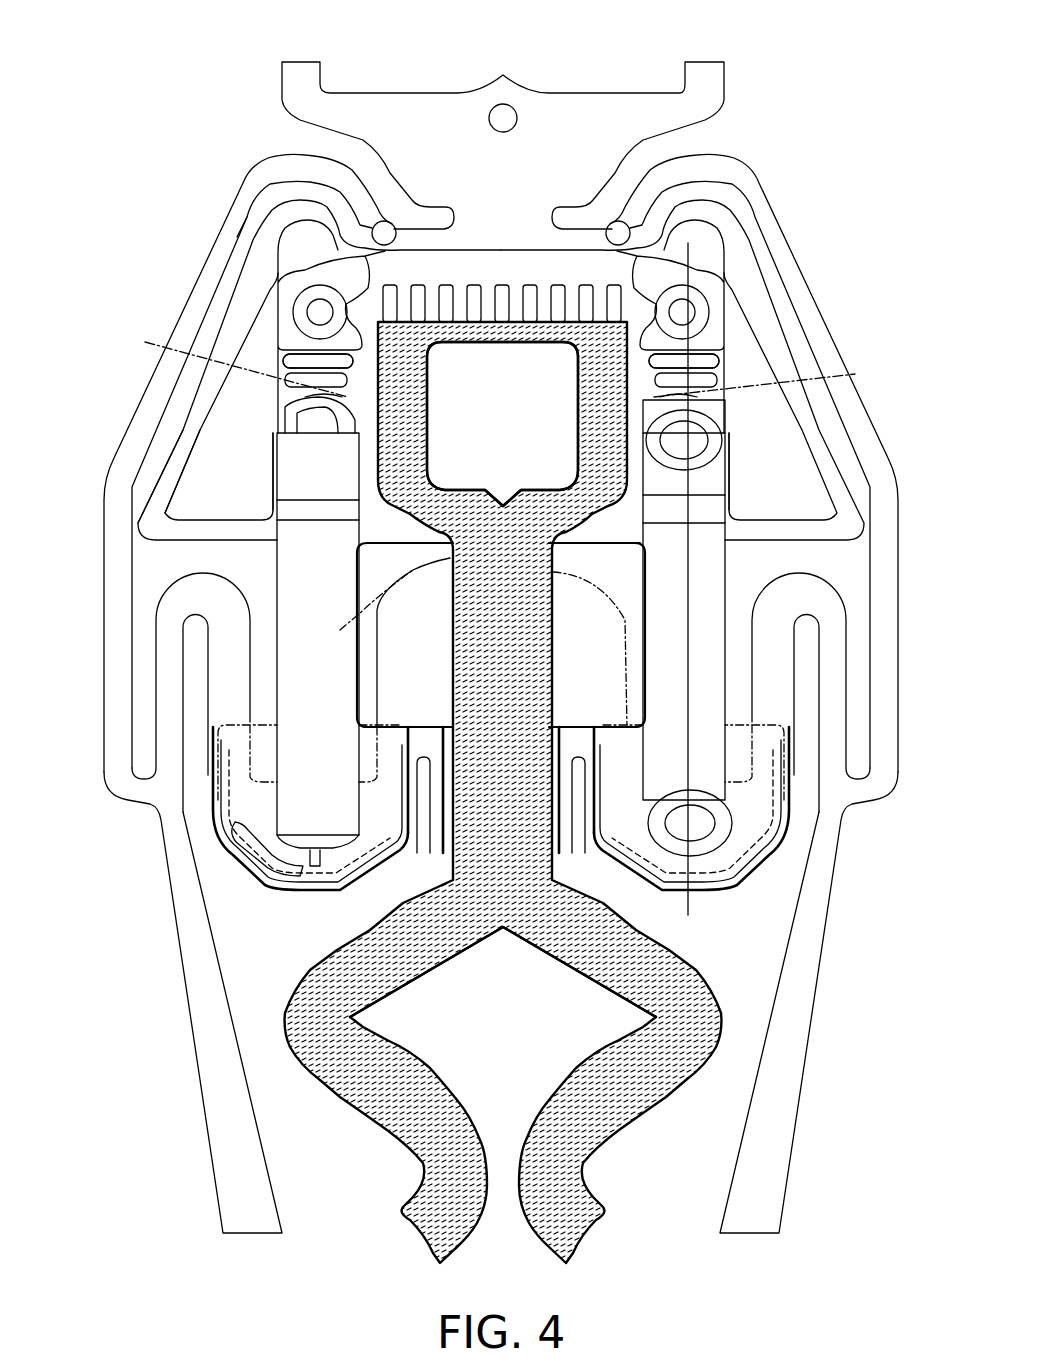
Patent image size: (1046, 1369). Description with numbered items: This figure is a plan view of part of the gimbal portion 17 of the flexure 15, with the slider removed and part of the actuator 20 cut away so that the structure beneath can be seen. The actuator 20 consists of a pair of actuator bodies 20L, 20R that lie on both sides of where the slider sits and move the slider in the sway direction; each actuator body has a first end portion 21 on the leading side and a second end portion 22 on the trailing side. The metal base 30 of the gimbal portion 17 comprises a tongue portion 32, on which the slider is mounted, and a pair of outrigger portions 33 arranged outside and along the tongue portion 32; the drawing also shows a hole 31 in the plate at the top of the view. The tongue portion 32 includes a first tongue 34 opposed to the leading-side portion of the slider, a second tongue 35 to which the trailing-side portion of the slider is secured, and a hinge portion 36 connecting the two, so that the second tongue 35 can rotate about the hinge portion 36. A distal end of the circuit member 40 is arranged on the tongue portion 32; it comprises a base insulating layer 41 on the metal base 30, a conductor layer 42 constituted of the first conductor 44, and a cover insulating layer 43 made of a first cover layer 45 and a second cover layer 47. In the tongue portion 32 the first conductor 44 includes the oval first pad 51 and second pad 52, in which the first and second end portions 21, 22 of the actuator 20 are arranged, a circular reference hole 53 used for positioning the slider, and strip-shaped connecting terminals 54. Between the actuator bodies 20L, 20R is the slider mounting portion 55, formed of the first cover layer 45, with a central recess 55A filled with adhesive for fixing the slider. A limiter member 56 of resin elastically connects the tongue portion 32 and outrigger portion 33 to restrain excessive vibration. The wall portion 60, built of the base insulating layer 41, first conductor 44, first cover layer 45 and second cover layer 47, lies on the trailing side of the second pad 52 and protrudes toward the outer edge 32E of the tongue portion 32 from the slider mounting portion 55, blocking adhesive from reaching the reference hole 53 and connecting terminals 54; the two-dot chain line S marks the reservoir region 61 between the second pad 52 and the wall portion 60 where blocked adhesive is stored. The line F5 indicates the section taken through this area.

The flexure 15 is at (503, 118).
The gimbal portion 17 is at (496, 684).
The actuator 20 is at (530, 679).
The actuator body 20L is at (283, 577).
The actuator body 20R is at (716, 555).
The first end portion 21 is at (277, 848).
The second end portion 22 is at (312, 425).
The metal base 30 is at (207, 1146).
The hole 31 is at (503, 110).
The tongue portion 32 is at (716, 652).
The outer edge 32E is at (283, 352).
The outrigger portion 33 is at (133, 455).
The first tongue 34 is at (377, 680).
The second tongue 35 is at (372, 549).
The hinge portion 36 is at (360, 604).
The circuit member 40 is at (371, 1092).
The base insulating layer 41 is at (646, 524).
The conductor layer 42 is at (562, 678).
The cover insulating layer 43 is at (617, 550).
The first conductor 44 is at (540, 636).
The first cover layer 45 is at (612, 542).
The second cover layer 47 is at (297, 355).
The first pad 51 is at (300, 850).
The second pad 52 is at (307, 420).
The reference hole 53 is at (320, 300).
The connecting terminals 54 is at (555, 283).
The slider mounting portion 55 is at (501, 723).
The recess 55A is at (430, 395).
The limiter member 56 is at (188, 433).
The wall portion 60 is at (285, 354).
The reservoir region 61 is at (285, 380).
The two-dot chain line S is at (501, 361).
The section line F5 is at (696, 258).